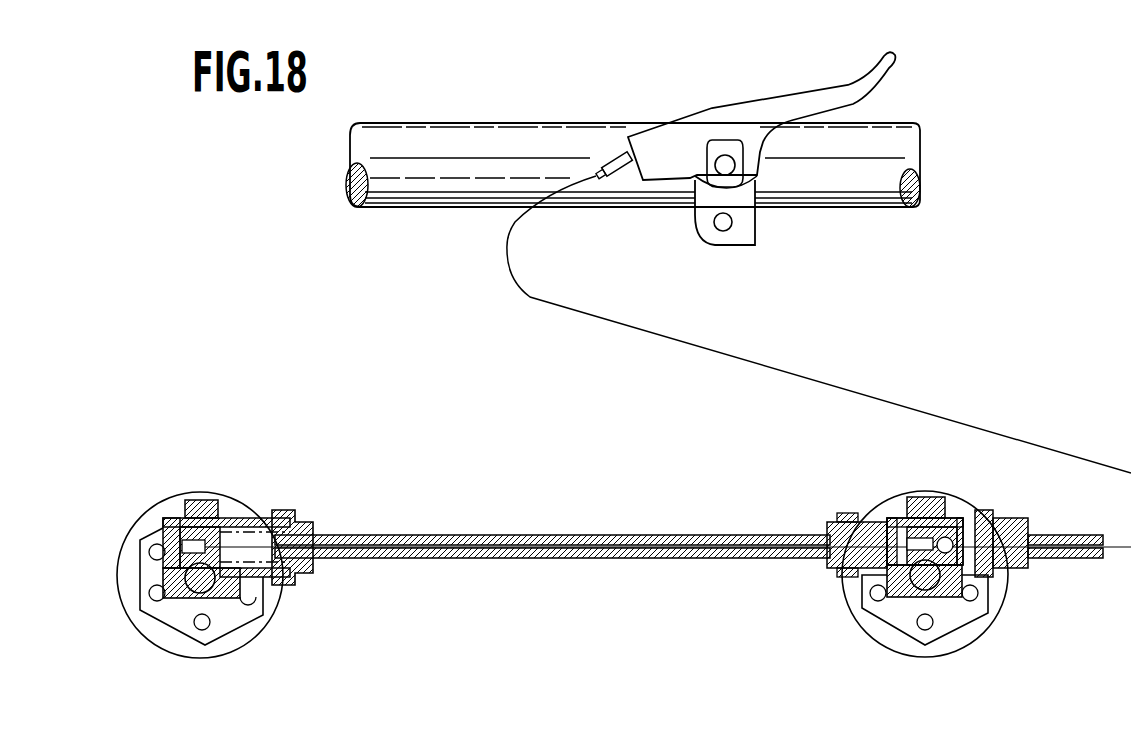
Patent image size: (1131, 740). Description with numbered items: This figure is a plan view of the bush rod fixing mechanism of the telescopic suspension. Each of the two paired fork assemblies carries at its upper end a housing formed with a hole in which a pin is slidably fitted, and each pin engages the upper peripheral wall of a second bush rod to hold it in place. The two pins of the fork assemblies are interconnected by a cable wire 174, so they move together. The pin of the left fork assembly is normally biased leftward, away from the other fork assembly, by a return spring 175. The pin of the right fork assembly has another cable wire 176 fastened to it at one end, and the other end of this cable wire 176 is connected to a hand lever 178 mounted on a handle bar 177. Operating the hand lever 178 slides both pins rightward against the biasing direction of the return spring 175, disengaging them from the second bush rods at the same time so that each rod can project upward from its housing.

The cable wire 174 is at (533, 559).
The return spring 175 is at (243, 520).
The cable wire 176 is at (596, 182).
The handle bar 177 is at (509, 133).
The hand lever 178 is at (718, 122).